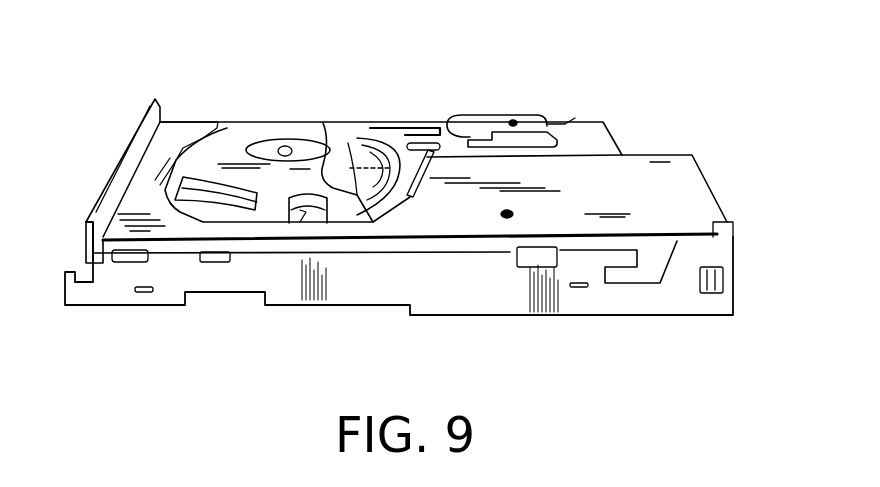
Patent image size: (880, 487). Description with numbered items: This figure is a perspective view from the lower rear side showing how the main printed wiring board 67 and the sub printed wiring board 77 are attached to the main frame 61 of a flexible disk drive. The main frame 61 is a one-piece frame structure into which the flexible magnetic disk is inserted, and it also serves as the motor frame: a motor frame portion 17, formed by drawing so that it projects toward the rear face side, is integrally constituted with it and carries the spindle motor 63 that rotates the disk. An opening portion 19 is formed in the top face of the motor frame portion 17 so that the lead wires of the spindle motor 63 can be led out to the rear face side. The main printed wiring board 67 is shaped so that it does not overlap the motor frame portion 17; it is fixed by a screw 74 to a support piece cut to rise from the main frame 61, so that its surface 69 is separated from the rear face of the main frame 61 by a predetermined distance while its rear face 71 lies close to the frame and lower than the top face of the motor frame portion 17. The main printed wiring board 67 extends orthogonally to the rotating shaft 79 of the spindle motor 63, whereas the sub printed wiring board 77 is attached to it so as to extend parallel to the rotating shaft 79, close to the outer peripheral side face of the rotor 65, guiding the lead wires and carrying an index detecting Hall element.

The motor frame portion 17 is at (347, 207).
The opening portion 19 is at (353, 165).
The main frame 61 is at (723, 278).
The spindle motor 63 is at (330, 135).
The rotor 65 is at (302, 213).
The main printed wiring board 67 is at (700, 187).
The surface 69 is at (467, 243).
The rear face 71 is at (651, 163).
The screw 74 is at (503, 220).
The sub printed wiring board 77 is at (437, 122).
The rotating shaft 79 is at (282, 142).